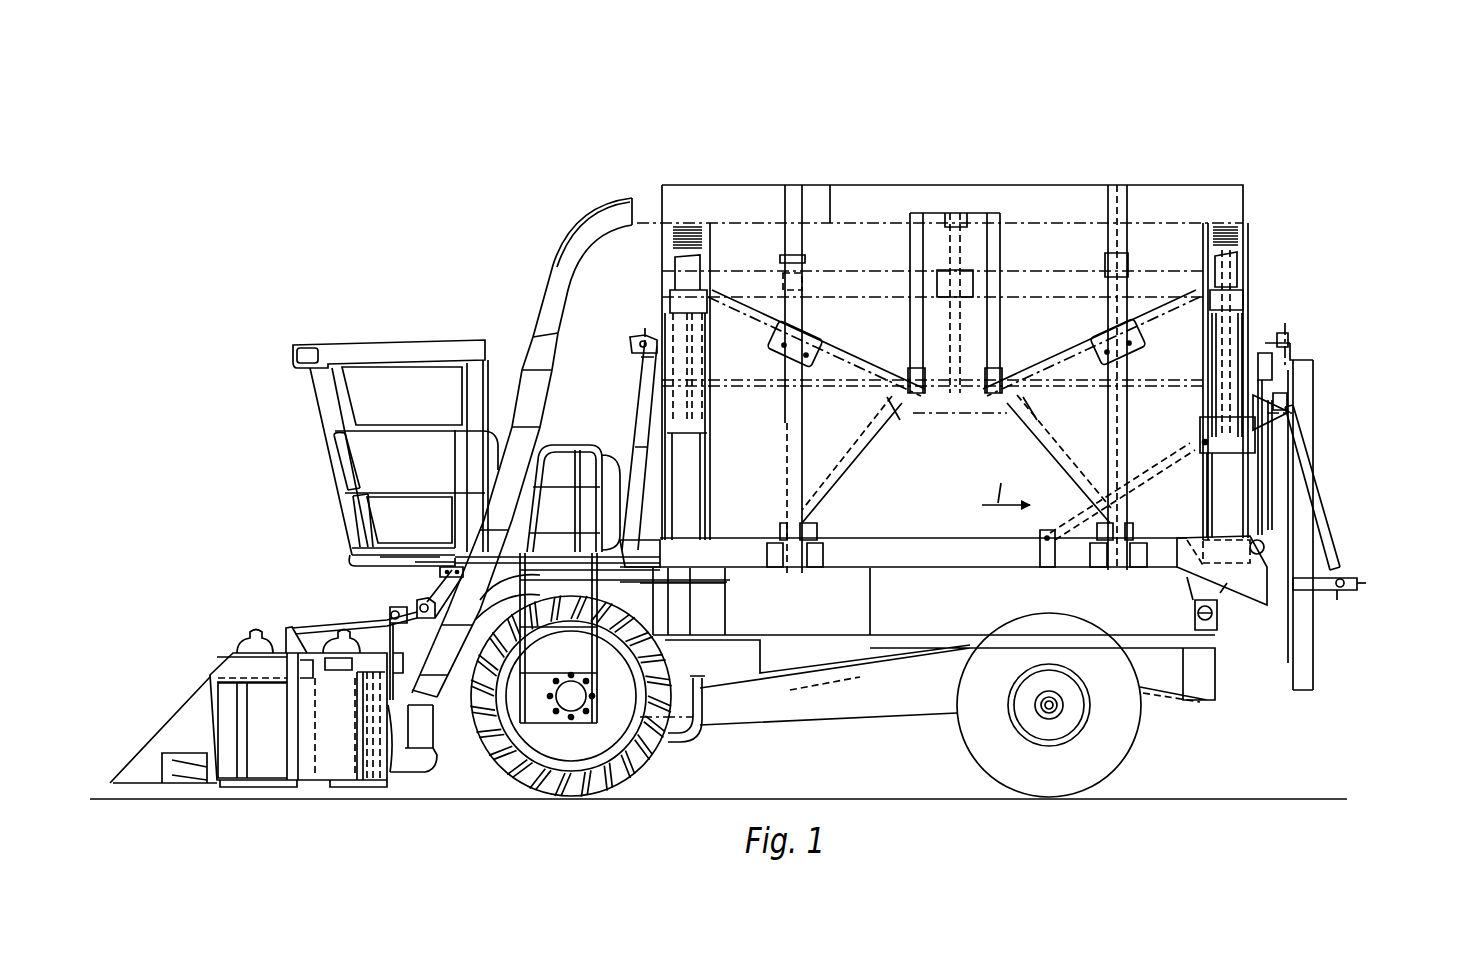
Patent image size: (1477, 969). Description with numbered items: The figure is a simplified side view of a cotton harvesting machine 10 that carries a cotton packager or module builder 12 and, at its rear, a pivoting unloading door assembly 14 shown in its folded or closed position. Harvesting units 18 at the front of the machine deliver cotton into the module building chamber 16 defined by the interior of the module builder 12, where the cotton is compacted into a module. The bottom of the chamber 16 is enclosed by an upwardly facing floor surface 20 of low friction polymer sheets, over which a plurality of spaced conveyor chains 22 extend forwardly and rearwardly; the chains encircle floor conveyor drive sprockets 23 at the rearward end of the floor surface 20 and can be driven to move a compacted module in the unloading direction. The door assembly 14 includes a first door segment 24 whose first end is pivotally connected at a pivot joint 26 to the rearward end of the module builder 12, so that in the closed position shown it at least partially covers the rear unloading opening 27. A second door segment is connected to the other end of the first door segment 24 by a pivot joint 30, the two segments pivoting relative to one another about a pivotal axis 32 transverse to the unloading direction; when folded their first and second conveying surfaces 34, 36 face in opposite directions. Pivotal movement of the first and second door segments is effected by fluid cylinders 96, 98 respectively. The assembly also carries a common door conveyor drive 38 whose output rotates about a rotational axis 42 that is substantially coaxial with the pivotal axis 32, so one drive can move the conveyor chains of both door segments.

The cotton harvesting machine 10 is at (1242, 124).
The cotton packager or module builder 12 is at (1028, 182).
The pivoting unloading door assembly 14 is at (1316, 357).
The module building chamber 16 is at (866, 320).
The harvesting units 18 is at (282, 650).
The floor surface 20 is at (923, 537).
The conveyor chains 22 is at (853, 537).
The floor conveyor drive sprockets 23 is at (1233, 624).
The pivot joint 26 is at (1263, 500).
The first door segment 24 is at (1259, 352).
The rear unloading opening 27 is at (1252, 482).
The pivot joint 30 is at (1360, 325).
The pivotal axis 32 is at (1360, 325).
The rotational axis 42 is at (1287, 339).
The first conveying surface 34 is at (1262, 500).
The second conveying surface 36 is at (1314, 672).
The common door conveyor drive 38 is at (1323, 379).
The fluid cylinder 96 is at (1158, 458).
The fluid cylinder 98 is at (1330, 531).